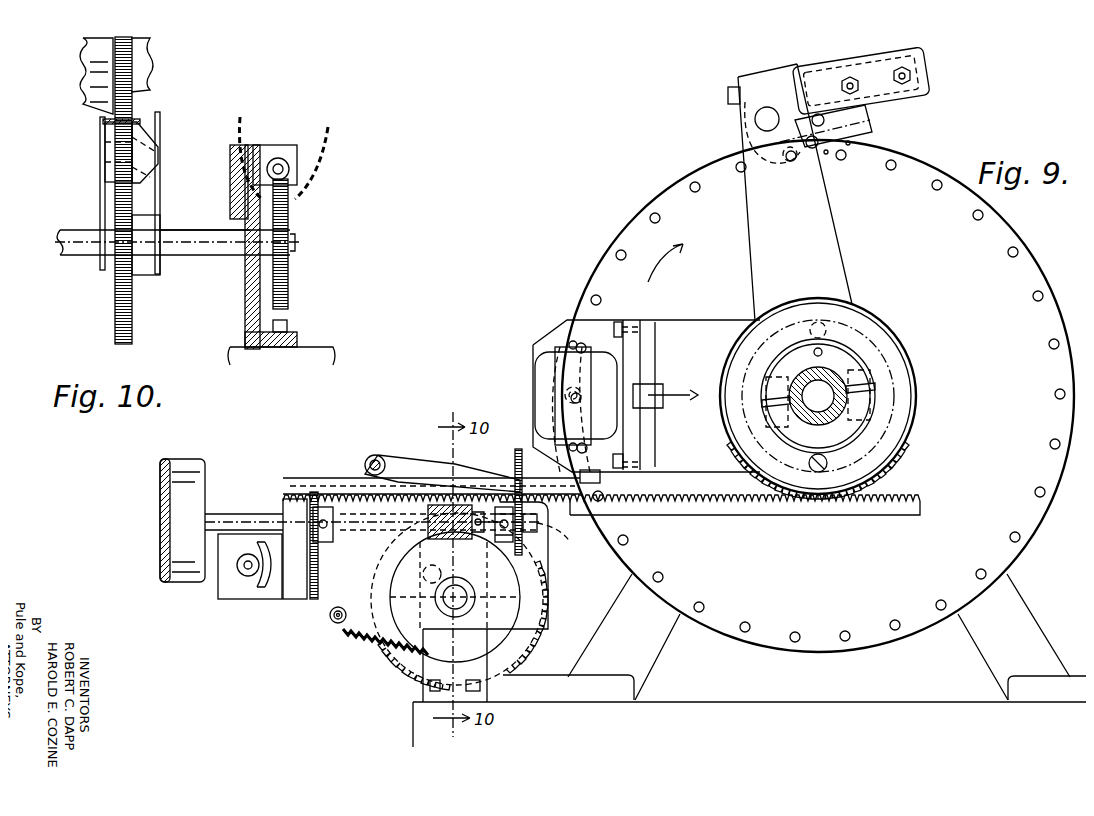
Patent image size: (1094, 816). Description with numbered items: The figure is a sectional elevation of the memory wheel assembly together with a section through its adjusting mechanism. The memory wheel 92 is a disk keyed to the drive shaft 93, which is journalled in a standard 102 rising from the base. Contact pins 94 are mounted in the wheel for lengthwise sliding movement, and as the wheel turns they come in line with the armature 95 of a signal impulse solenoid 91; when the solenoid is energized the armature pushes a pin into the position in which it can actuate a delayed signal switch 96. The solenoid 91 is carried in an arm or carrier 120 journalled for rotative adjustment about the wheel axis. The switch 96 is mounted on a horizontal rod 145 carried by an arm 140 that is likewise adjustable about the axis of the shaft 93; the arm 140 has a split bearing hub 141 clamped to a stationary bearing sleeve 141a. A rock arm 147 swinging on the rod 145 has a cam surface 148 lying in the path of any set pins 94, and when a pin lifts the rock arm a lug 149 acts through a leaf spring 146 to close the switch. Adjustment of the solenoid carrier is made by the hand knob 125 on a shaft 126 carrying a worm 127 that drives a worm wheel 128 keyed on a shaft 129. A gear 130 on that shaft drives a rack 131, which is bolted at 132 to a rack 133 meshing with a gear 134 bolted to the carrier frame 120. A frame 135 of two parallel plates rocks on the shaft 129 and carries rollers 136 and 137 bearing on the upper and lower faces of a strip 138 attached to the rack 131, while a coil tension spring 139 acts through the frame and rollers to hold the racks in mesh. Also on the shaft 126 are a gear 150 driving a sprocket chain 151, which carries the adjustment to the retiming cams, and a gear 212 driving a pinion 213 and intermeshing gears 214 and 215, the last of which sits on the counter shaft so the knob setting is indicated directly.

In FIG. 9, the signal impulse solenoid 91 is at (543, 377).
In FIG. 9, the memory wheel 92 is at (1010, 282).
In FIG. 9, the drive shaft 93 is at (833, 381).
In FIG. 9, the contact pins 94 is at (1013, 250).
In FIG. 9, the armature 95 is at (563, 393).
In FIG. 9, the delayed signal switch 96 is at (920, 98).
In FIG. 9, the standard 102 is at (647, 652).
In FIG. 9, the solenoid carrier 120 is at (705, 302).
In FIG. 9, the adjusting knob 125 is at (178, 492).
In FIG. 10, the shaft 126 is at (282, 165).
In FIG. 9, the shaft 126 is at (247, 515).
In FIG. 10, the worm 127 is at (278, 152).
In FIG. 9, the worm 127 is at (430, 523).
In FIG. 10, the worm wheel 128 is at (290, 213).
In FIG. 9, the worm wheel 128 is at (392, 580).
In FIG. 10, the shaft 129 is at (232, 245).
In FIG. 9, the shaft 129 is at (457, 595).
In FIG. 10, the gear 130 is at (115, 306).
In FIG. 9, the gear 130 is at (543, 637).
In FIG. 10, the rack 131 is at (105, 133).
In FIG. 9, the rack 131 is at (338, 485).
In FIG. 9, the bolt 132 is at (612, 460).
In FIG. 9, the rack 133 is at (858, 505).
In FIG. 10, the gear 134 is at (113, 62).
In FIG. 9, the gear 134 is at (880, 475).
In FIG. 10, the frame 135 is at (160, 190).
In FIG. 9, the frame 135 is at (343, 627).
In FIG. 9, the roller 136 is at (380, 455).
In FIG. 10, the roller 137 is at (137, 143).
In FIG. 9, the roller 137 is at (545, 525).
In FIG. 10, the strip 138 is at (140, 118).
In FIG. 9, the strip 138 is at (562, 475).
In FIG. 9, the coil tension spring 139 is at (387, 673).
In FIG. 9, the arm 140 is at (812, 222).
In FIG. 9, the split bearing hub 141 is at (848, 430).
In FIG. 9, the stationary bearing sleeve 141a is at (846, 393).
In FIG. 9, the horizontal rod 145 is at (755, 117).
In FIG. 9, the leaf spring 146 is at (848, 143).
In FIG. 9, the rock arm 147 is at (872, 126).
In FIG. 9, the cam surface 148 is at (826, 152).
In FIG. 9, the lug 149 is at (805, 150).
In FIG. 10, the gear 150 is at (305, 165).
In FIG. 9, the gear 150 is at (505, 553).
In FIG. 10, the sprocket chain 151 is at (325, 138).
In FIG. 9, the sprocket chain 151 is at (515, 465).
In FIG. 9, the gear 212 is at (312, 490).
In FIG. 9, the pinion 213 is at (313, 598).
In FIG. 9, the gear 214 is at (267, 593).
In FIG. 9, the gear 215 is at (247, 583).